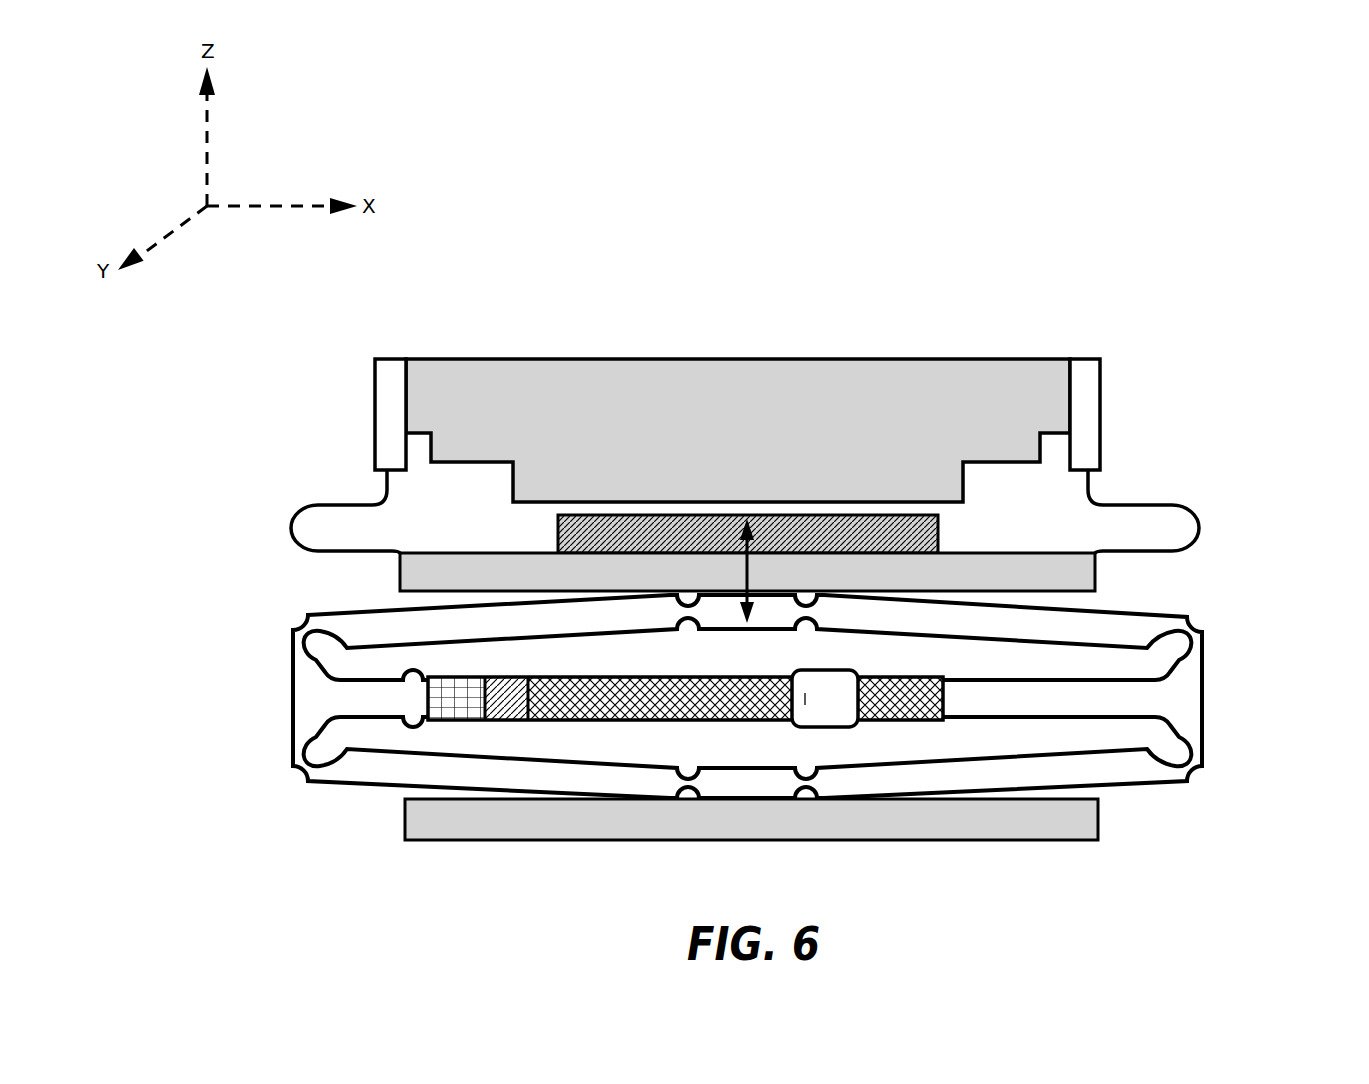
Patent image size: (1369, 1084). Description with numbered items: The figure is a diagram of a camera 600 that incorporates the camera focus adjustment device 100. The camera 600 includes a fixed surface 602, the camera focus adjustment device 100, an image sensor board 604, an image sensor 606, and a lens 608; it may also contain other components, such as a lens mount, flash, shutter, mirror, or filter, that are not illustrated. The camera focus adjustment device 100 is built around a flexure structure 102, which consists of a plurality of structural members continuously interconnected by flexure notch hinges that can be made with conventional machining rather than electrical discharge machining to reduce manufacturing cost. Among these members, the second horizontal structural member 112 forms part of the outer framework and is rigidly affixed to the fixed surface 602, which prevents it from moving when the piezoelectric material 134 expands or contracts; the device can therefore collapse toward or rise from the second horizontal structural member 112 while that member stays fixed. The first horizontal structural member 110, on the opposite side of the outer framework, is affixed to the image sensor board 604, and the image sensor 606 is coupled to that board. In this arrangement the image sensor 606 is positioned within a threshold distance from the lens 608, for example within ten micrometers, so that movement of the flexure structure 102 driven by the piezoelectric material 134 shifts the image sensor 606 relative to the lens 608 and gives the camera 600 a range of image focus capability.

The camera 600 is at (1080, 220).
The lens 608 is at (513, 484).
The image sensor 606 is at (938, 540).
The image sensor board 604 is at (1097, 582).
The fixed surface 602 is at (958, 841).
The camera focus adjustment device 100 is at (296, 600).
The flexure structure 102 is at (1203, 697).
The first horizontal structural member 110 is at (779, 614).
The second horizontal structural member 112 is at (749, 778).
The piezoelectric material 134 is at (642, 722).